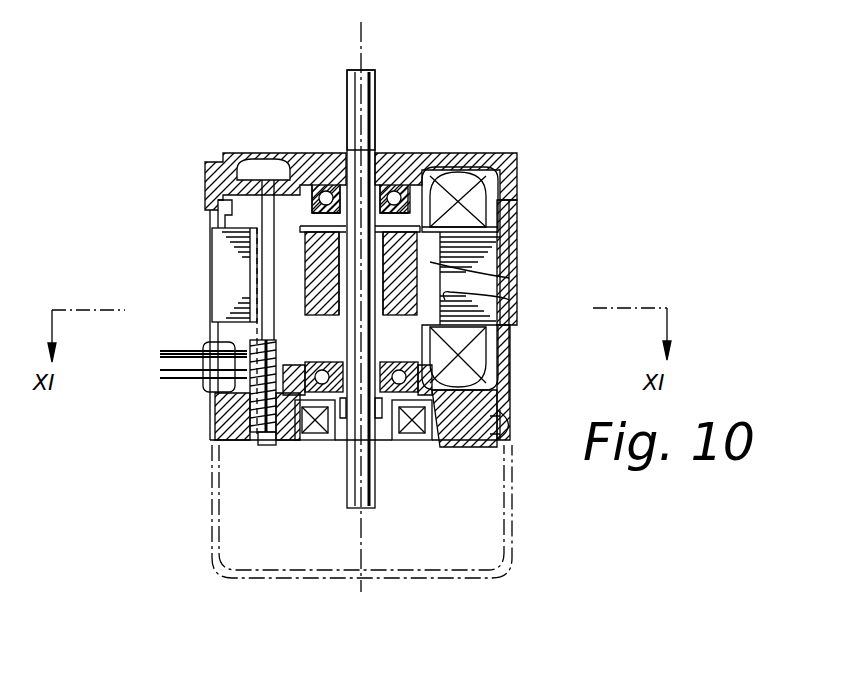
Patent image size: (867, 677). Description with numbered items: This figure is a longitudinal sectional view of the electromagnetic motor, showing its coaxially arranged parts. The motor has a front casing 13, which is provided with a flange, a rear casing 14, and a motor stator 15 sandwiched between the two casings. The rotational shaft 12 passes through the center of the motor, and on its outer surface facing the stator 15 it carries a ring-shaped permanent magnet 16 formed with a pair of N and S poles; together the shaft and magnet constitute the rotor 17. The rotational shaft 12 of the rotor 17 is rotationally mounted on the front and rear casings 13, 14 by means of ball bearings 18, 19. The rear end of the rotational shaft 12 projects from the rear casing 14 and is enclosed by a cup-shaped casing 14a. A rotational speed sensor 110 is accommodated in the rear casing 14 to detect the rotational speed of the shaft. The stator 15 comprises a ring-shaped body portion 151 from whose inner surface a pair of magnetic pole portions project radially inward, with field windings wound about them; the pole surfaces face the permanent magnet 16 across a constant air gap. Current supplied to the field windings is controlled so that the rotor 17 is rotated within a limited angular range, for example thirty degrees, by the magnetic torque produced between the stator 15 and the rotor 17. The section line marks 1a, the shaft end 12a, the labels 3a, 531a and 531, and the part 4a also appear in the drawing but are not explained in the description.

The motor axis 1a is at (361, 31).
The rotational shaft 12 is at (348, 107).
The shaft end 12a is at (375, 107).
The ball bearing 18 is at (430, 162).
The housing top plate 3a is at (517, 172).
The front casing 13 is at (512, 207).
The ring-shaped body portion 151 is at (512, 236).
The coil winding 531a is at (512, 257).
The coil 531 is at (512, 290).
The motor stator 15 is at (512, 315).
The rear casing 14 is at (512, 364).
The rotor 17 is at (290, 252).
The ring-shaped permanent magnet 16 is at (306, 292).
The ball bearing 19 is at (258, 397).
The base plate 4a is at (272, 448).
The rotational speed sensor 110 is at (308, 452).
The cup-shaped casing 14a is at (512, 510).